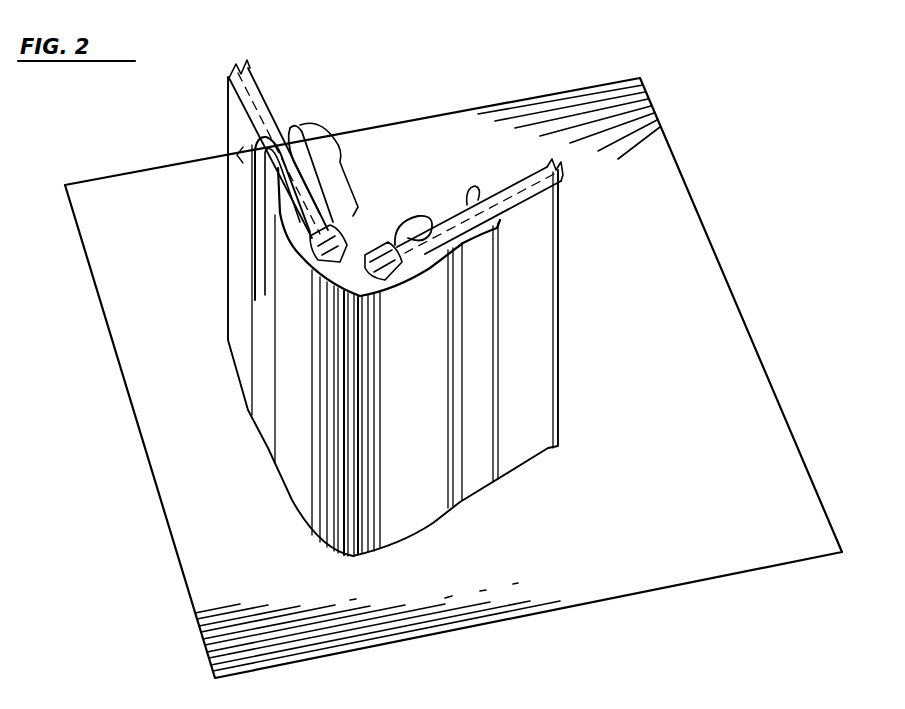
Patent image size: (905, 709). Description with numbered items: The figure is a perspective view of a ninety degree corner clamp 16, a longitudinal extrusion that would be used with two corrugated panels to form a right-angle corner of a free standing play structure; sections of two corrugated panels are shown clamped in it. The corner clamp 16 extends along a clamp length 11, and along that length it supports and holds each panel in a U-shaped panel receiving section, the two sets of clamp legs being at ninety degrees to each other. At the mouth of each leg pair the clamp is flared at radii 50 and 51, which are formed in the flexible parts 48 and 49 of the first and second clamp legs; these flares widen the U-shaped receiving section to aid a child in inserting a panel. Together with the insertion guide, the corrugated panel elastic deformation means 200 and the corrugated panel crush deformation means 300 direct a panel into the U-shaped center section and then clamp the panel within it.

The clamp length 11 is at (498, 337).
The 90 degree corner clamp 16 is at (436, 526).
The flexible part of first clamp leg 48 is at (338, 168).
The flexible part of second clamp leg 49 is at (250, 202).
The radius 50 is at (267, 172).
The radius 51 is at (300, 148).
The corrugated panel elastic deformation means 200 is at (467, 205).
The corrugated panel crush deformation means 300 is at (424, 212).